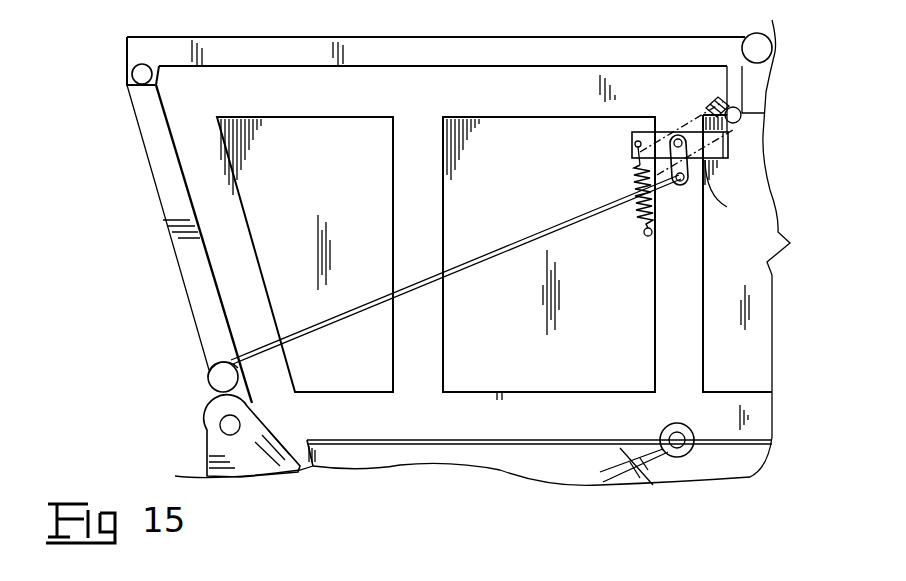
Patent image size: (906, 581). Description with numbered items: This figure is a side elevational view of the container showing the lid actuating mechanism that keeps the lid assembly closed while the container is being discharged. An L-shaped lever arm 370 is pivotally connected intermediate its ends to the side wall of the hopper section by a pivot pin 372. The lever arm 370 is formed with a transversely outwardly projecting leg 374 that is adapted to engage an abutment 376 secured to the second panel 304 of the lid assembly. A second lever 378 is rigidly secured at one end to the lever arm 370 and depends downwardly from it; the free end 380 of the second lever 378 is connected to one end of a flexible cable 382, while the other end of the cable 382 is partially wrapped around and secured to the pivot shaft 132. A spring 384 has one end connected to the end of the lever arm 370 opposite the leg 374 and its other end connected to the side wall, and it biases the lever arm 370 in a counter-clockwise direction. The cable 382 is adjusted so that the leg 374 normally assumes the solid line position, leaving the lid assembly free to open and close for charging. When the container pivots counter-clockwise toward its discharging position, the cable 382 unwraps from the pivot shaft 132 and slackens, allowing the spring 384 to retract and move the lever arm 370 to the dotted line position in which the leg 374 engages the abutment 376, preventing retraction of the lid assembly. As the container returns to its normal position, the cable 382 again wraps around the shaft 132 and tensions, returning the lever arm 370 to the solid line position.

The pivot shaft 132 is at (228, 425).
The second panel 304 is at (458, 252).
The L-shaped lever arm 370 is at (659, 131).
The pivot pin 372 is at (713, 165).
The leg 374 is at (730, 145).
The abutment 376 is at (737, 90).
The second lever 378 is at (737, 191).
The free end 380 is at (680, 183).
The flexible cable 382 is at (528, 232).
The tension spring 384 is at (632, 176).